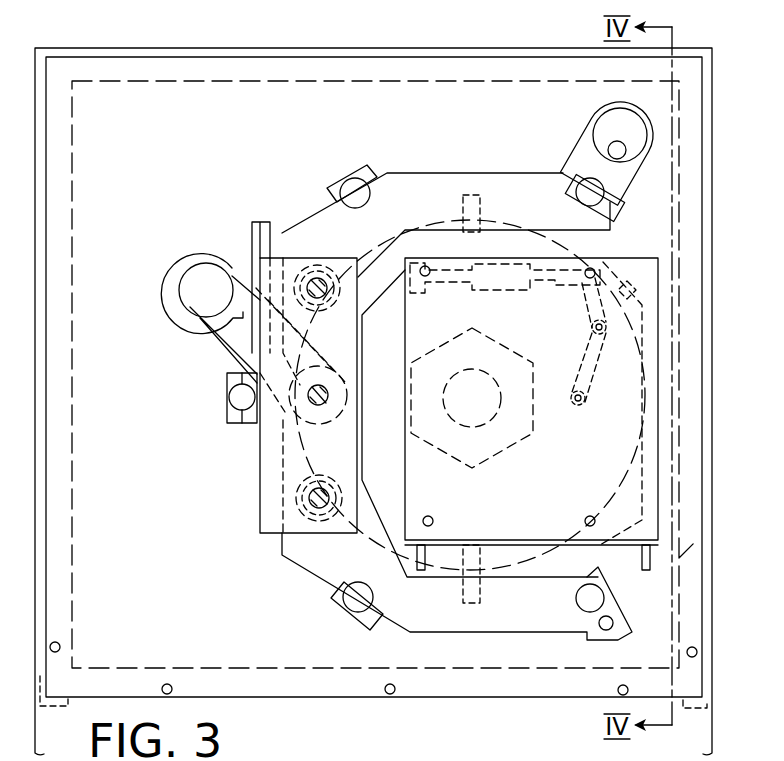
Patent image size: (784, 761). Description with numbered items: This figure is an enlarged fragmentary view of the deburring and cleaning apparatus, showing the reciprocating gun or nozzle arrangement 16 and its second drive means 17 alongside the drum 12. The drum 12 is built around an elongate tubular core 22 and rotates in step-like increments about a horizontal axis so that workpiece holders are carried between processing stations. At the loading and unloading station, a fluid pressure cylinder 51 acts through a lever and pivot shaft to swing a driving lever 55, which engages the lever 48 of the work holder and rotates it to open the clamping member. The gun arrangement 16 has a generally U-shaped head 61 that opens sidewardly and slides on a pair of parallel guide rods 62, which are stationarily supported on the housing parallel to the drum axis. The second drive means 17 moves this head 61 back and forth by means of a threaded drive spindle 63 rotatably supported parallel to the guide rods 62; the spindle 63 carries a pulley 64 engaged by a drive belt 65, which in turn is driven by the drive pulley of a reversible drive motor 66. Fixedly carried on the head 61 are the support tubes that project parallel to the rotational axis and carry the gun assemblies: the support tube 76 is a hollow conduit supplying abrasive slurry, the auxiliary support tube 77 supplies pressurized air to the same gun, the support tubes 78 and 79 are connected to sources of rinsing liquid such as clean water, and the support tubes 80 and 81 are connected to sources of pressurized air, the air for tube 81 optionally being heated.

The drum 12 is at (645, 429).
The reciprocating gun or nozzle arrangement 16 is at (427, 170).
The second drive means 17 is at (200, 346).
The tubular core 22 is at (500, 454).
The lever 48 is at (588, 390).
The fluid pressure cylinder 51 is at (490, 287).
The driving lever 55 is at (594, 358).
The U-shaped head 61 is at (428, 618).
The guide rods 62 is at (318, 278).
The threaded drive spindle 63 is at (316, 398).
The pulley 64 is at (304, 377).
The drive belt 65 is at (222, 345).
The drive motor 66 is at (178, 297).
The support tube 76 is at (592, 600).
The auxiliary support tube 77 is at (612, 623).
The support tube 78 is at (357, 598).
The support tube 79 is at (243, 400).
The support tube 80 is at (352, 190).
The support tube 81 is at (586, 195).